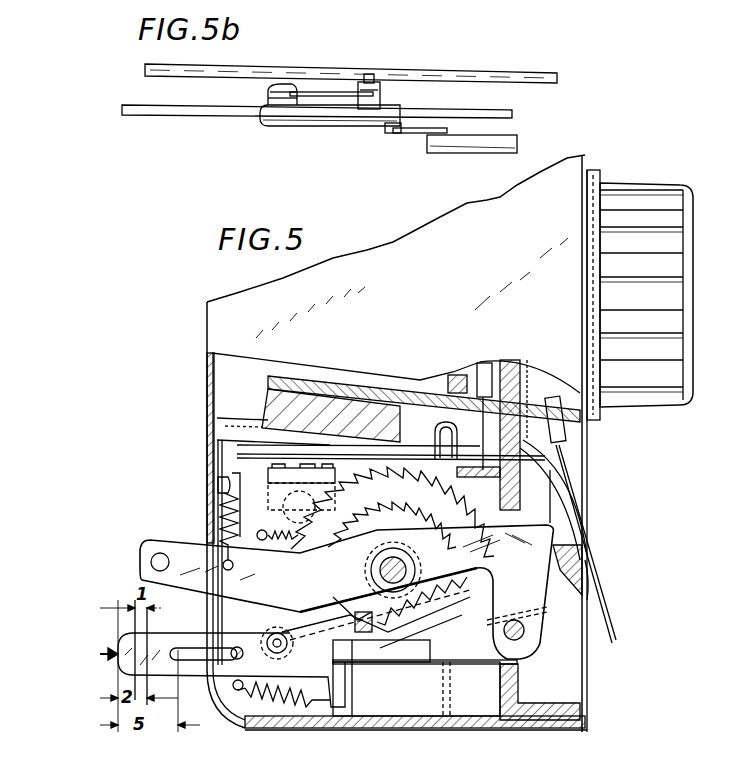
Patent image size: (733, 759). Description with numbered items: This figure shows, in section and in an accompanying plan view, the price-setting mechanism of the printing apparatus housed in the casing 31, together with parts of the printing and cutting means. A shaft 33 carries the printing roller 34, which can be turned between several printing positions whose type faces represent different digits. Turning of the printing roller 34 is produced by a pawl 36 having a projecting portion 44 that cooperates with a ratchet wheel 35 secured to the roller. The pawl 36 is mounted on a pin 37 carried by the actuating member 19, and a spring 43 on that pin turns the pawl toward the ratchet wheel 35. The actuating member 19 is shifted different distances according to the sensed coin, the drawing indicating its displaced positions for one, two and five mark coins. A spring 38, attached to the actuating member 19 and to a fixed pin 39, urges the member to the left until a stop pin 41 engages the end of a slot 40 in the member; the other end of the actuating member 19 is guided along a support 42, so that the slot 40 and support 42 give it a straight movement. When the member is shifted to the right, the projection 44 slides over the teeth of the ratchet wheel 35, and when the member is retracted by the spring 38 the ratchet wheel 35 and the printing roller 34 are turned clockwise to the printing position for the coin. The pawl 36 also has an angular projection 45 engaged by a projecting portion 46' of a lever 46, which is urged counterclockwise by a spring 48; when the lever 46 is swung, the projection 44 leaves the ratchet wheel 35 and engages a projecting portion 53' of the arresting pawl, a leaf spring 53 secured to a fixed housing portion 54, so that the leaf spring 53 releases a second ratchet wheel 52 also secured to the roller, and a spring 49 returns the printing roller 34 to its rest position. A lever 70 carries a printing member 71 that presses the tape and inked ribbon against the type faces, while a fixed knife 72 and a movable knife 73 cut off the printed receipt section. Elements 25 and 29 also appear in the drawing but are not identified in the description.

In FIG. 5b, the actuating member 19 is at (497, 106).
In FIG. 5, the actuating member 19 is at (190, 635).
In FIG. 5, the operating knob 25 is at (620, 188).
In FIG. 5, the pointer 29 is at (586, 565).
In FIG. 5, the casing 31 is at (456, 729).
In FIG. 5, the shaft 33 is at (416, 566).
In FIG. 5, the printing roller 34 is at (376, 520).
In FIG. 5, the ratchet wheel 35 is at (410, 522).
In FIG. 5b, the pawl 36 is at (328, 127).
In FIG. 5, the pawl 36 is at (365, 664).
In FIG. 5, the pin 37 is at (277, 640).
In FIG. 5, the spring 38 is at (274, 706).
In FIG. 5, the fixed pin 39 is at (235, 690).
In FIG. 5, the slot 40 is at (200, 662).
In FIG. 5, the stop pin 41 is at (237, 647).
In FIG. 5, the support 42 is at (500, 678).
In FIG. 5b, the spring 43 is at (315, 90).
In FIG. 5, the spring 43 is at (302, 604).
In FIG. 5b, the projecting portion 44 is at (390, 132).
In FIG. 5, the projecting portion 44 is at (422, 612).
In FIG. 5b, the angular projection 45 is at (372, 74).
In FIG. 5, the angular projection 45 is at (374, 618).
In FIG. 5b, the lever 46 is at (351, 61).
In FIG. 5, the lever 46 is at (345, 584).
In FIG. 5b, the projecting portion 46' is at (385, 74).
In FIG. 5, the projecting portion 46' is at (341, 600).
In FIG. 5, the spring 48 is at (214, 483).
In FIG. 5, the spring 49 is at (270, 525).
In FIG. 5, the second ratchet wheel 52 is at (505, 628).
In FIG. 5b, the leaf spring 53 is at (472, 159).
In FIG. 5, the leaf spring 53 is at (416, 674).
In FIG. 5b, the projecting portion 53' is at (418, 149).
In FIG. 5, the projecting portion 53' is at (425, 686).
In FIG. 5, the fixed housing portion 54 is at (598, 582).
In FIG. 5, the lever 70 is at (370, 392).
In FIG. 5, the printing member 71 is at (268, 398).
In FIG. 5, the fixed knife 72 is at (495, 475).
In FIG. 5, the knife 73 is at (459, 439).